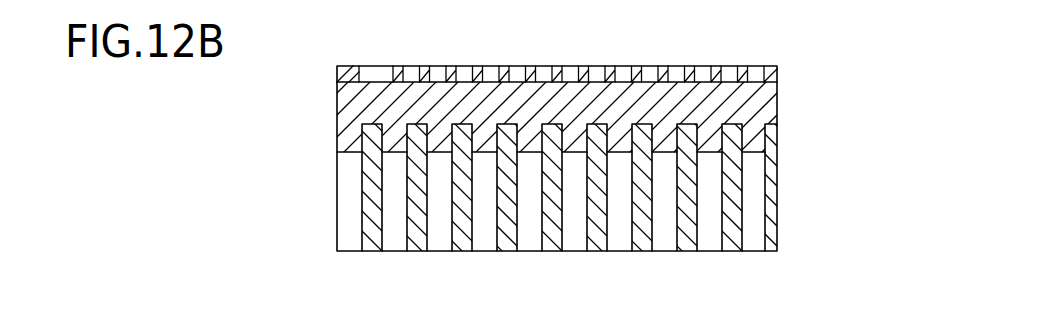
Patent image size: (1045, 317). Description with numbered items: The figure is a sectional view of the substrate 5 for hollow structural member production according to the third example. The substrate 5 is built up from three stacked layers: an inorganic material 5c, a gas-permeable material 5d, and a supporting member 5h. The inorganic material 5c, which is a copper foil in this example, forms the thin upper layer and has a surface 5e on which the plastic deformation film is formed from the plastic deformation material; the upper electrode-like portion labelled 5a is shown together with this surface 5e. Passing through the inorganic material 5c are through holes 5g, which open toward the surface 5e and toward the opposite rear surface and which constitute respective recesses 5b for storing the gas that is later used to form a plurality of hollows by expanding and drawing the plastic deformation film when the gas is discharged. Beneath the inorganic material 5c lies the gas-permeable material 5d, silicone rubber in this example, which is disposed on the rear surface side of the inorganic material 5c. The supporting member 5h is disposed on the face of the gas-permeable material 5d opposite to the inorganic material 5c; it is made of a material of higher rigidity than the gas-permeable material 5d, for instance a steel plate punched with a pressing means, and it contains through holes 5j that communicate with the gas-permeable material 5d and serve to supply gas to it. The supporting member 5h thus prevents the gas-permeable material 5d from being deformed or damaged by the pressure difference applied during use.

The substrate for hollow structural member production 5 is at (307, 171).
The inorganic material 5c is at (342, 65).
The upper electrode layer 5a is at (550, 45).
The surface 5e is at (550, 45).
The through holes 5g is at (585, 45).
The recesses 5b is at (488, 76).
The gas-permeable material 5d is at (763, 104).
The supporting member 5h is at (777, 195).
The through holes 5j is at (533, 235).